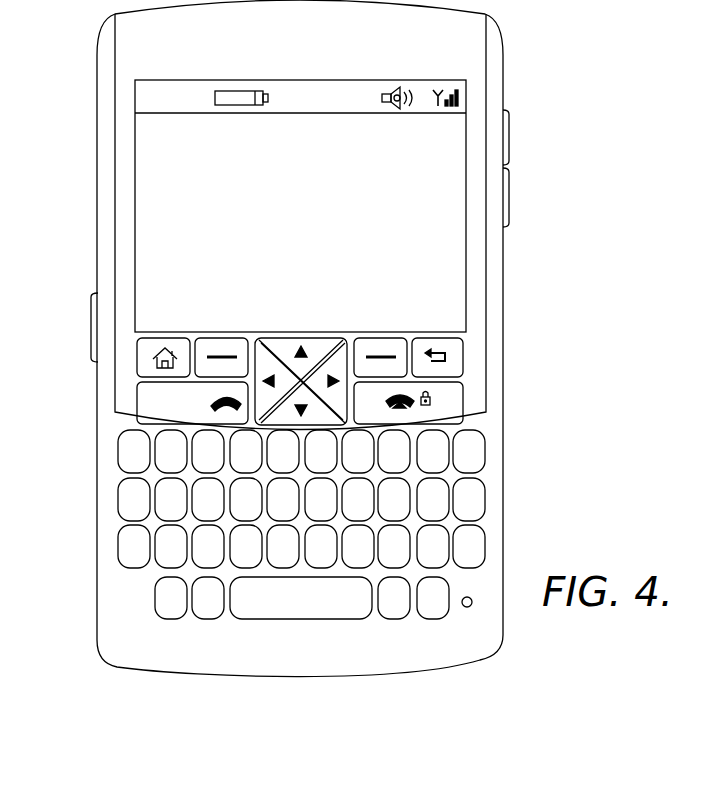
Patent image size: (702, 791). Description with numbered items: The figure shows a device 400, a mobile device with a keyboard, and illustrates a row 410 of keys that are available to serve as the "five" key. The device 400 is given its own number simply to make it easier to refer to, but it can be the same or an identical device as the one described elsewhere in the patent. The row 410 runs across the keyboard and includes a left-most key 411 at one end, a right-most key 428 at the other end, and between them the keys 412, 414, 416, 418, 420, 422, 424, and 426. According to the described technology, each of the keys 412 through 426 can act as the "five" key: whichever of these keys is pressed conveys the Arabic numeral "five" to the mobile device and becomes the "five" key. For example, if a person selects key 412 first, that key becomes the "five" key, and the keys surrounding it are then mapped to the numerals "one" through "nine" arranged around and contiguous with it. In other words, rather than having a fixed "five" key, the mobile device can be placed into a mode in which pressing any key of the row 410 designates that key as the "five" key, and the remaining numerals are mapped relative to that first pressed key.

The device 400 is at (489, 659).
The row of keys 410 is at (294, 601).
The left-most key 411 is at (121, 486).
The key 412 is at (172, 507).
The key 414 is at (210, 507).
The key 416 is at (248, 507).
The key 418 is at (283, 507).
The key 420 is at (322, 515).
The key 422 is at (358, 515).
The key 424 is at (395, 515).
The key 426 is at (433, 515).
The right-most key 428 is at (482, 468).